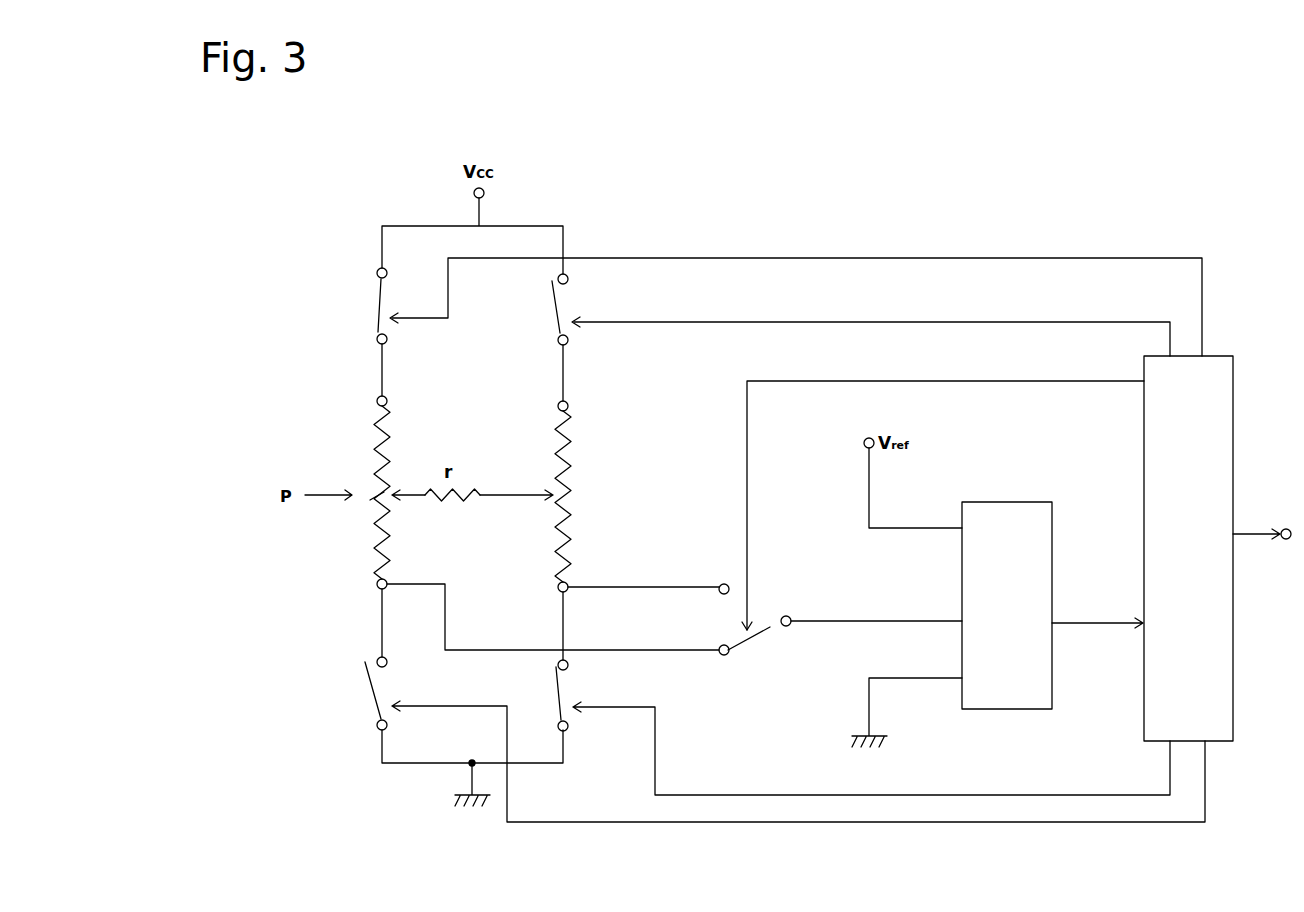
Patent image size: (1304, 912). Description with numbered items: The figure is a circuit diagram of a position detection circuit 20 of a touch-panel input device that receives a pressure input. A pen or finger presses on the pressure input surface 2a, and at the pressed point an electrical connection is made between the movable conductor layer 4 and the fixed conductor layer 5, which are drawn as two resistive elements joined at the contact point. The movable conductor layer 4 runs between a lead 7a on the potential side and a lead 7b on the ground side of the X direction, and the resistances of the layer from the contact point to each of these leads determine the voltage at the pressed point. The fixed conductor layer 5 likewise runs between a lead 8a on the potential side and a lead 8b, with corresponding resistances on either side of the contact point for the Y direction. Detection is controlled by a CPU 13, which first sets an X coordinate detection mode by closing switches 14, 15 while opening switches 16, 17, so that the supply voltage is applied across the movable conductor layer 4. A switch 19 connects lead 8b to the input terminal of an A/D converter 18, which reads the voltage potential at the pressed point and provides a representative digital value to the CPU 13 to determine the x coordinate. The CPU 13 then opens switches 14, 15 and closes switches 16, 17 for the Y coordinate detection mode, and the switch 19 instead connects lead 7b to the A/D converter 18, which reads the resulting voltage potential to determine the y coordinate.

The pressure input surface 2a is at (366, 513).
The movable conductor layer 4 is at (372, 440).
The fixed conductor layer 5 is at (557, 428).
The lead 7a is at (376, 401).
The lead 7b is at (376, 586).
The lead 8a is at (569, 407).
The lead 8b is at (567, 592).
The CPU 13 is at (1188, 548).
The switch 14 is at (378, 300).
The switch 15 is at (372, 688).
The switch 16 is at (568, 300).
The switch 17 is at (575, 690).
The A/D converter 18 is at (1007, 605).
The switch 19 is at (765, 632).
The position detection circuit 20 is at (1038, 224).